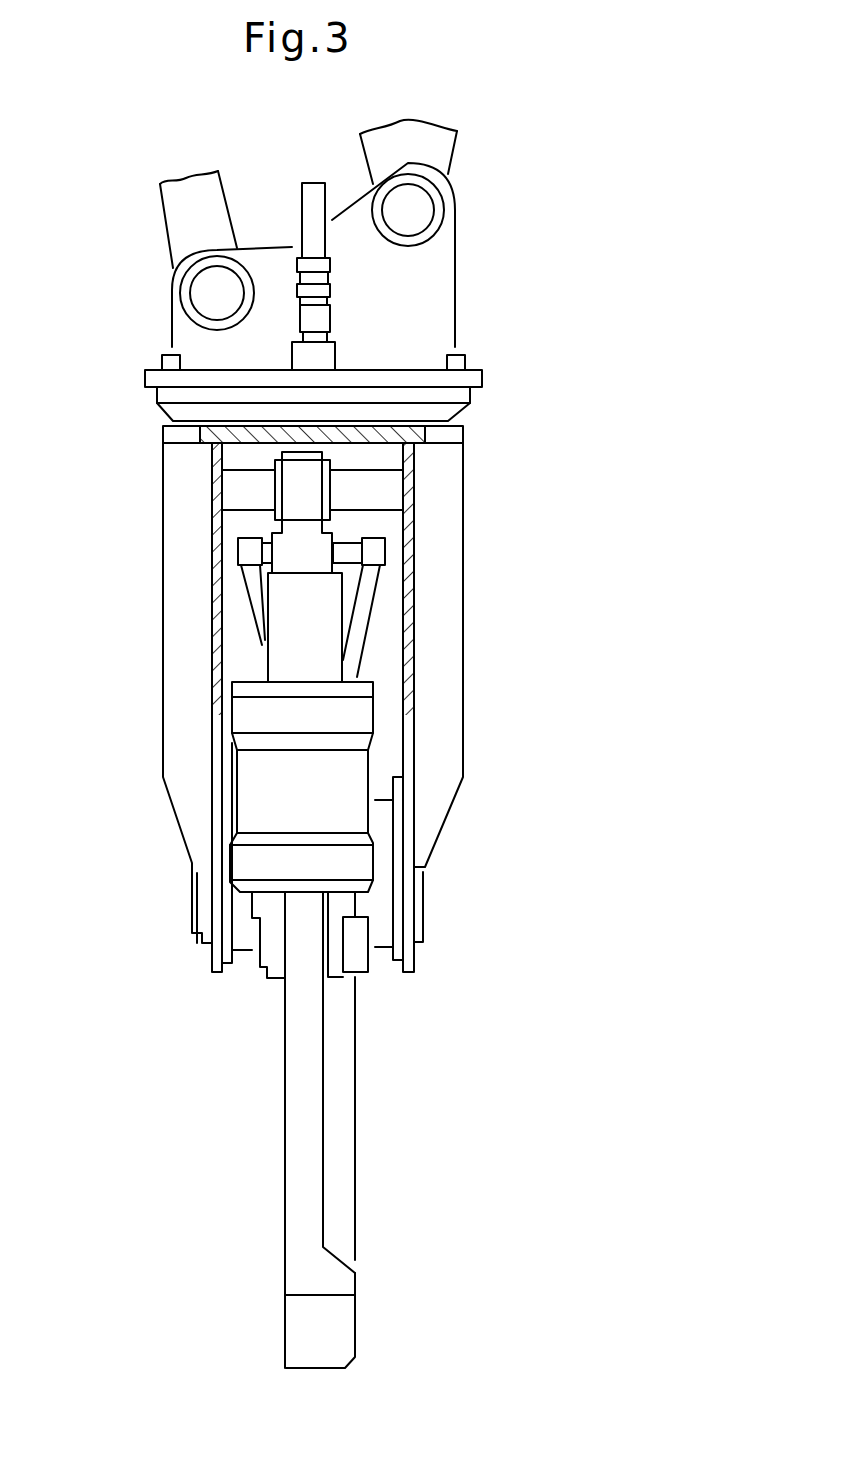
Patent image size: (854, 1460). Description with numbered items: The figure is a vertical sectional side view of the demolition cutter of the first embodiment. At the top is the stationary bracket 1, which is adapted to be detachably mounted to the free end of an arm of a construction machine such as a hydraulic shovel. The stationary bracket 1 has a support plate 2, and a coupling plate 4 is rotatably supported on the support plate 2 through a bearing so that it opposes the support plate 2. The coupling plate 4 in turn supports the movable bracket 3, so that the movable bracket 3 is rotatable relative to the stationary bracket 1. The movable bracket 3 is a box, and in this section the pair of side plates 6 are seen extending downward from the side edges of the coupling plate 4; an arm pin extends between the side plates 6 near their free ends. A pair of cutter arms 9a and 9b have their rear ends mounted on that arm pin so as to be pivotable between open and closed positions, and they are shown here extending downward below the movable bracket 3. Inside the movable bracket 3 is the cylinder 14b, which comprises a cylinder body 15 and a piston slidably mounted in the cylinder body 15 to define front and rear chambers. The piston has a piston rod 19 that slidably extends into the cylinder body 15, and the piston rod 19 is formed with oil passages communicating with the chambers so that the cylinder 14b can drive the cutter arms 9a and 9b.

The stationary bracket 1 is at (173, 282).
The support plate 2 is at (190, 380).
The movable bracket 3 is at (163, 435).
The coupling plate 4 is at (226, 444).
The side plates 6 is at (215, 543).
The piston rod 19 is at (323, 613).
The cylinder 14b is at (233, 765).
The cylinder body 15 is at (257, 807).
The cutter arm 9a is at (342, 1113).
The cutter arm 9b is at (305, 1115).